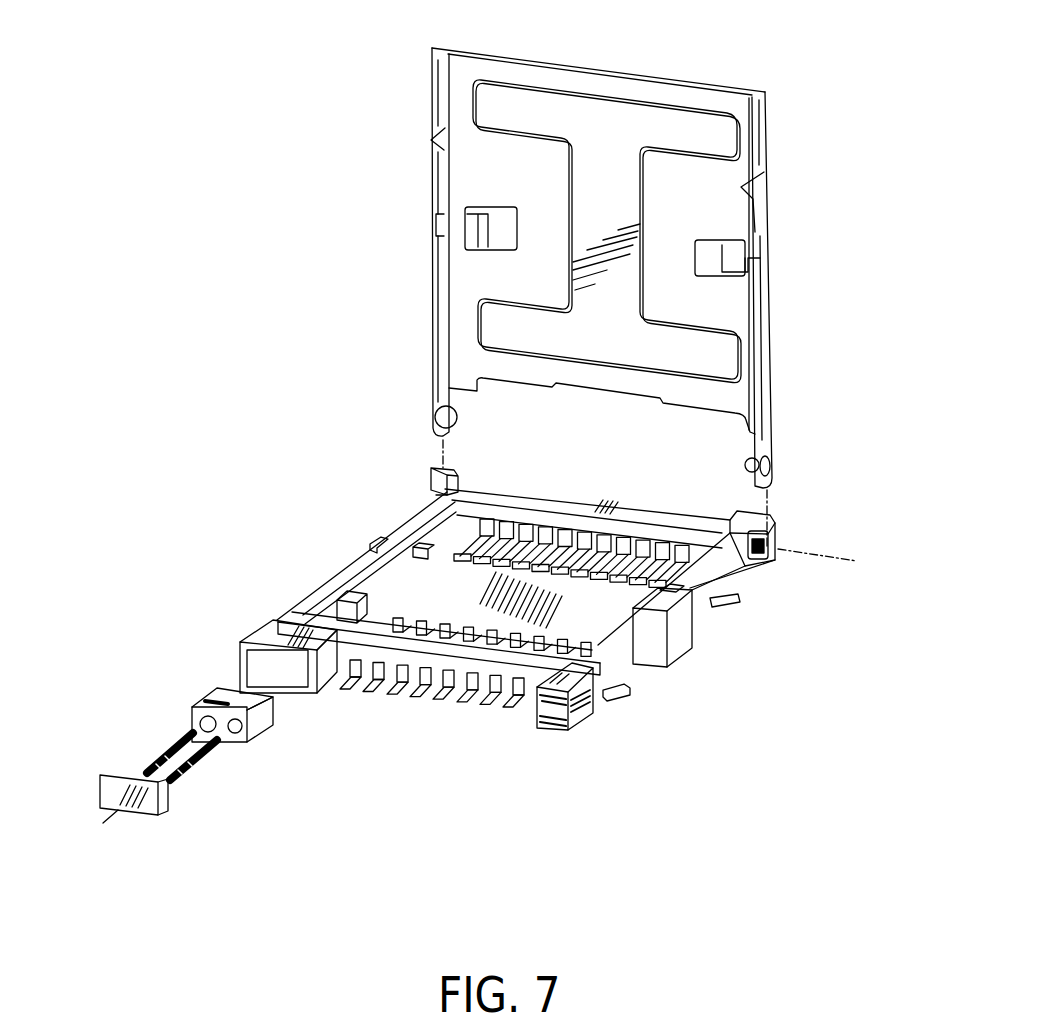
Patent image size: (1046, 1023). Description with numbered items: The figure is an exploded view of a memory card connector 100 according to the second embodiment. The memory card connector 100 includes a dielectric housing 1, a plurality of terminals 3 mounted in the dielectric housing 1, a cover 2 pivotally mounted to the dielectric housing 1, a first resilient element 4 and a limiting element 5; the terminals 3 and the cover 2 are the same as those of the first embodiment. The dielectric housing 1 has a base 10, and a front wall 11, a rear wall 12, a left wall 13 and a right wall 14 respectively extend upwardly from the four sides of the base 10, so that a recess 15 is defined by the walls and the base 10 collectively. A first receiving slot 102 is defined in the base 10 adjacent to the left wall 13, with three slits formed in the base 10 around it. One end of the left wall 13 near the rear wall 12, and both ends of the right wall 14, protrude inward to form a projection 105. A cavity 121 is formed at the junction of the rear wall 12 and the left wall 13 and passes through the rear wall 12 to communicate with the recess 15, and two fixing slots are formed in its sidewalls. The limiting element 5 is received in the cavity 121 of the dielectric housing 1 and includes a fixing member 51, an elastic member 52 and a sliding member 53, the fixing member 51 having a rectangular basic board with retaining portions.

The memory card connector 100 is at (228, 52).
The cover 2 is at (552, 183).
The dielectric housing 1 is at (513, 616).
The left wall 13 is at (390, 527).
The first receiving slot 102 is at (424, 545).
The first resilient element 4 is at (447, 545).
The terminals 3 is at (496, 524).
The front wall 11 is at (668, 520).
The projection 105 is at (352, 593).
The right wall 14 is at (705, 615).
The recess 15 is at (634, 643).
The base 10 is at (572, 700).
The rear wall 12 is at (440, 668).
The cavity 121 is at (293, 675).
The limiting element 5 is at (172, 718).
The sliding member 53 is at (226, 697).
The elastic member 52 is at (167, 742).
The fixing member 51 is at (110, 773).